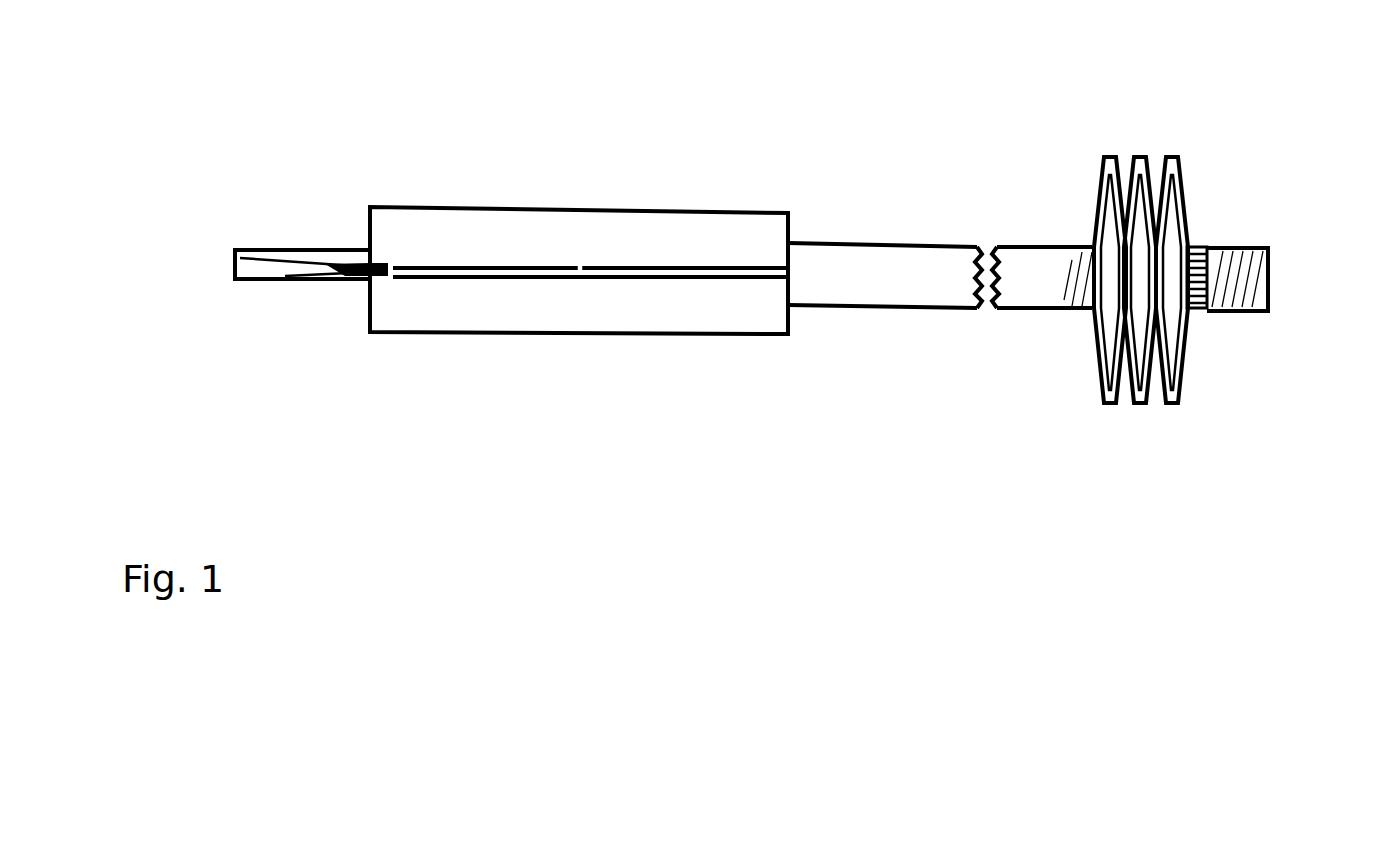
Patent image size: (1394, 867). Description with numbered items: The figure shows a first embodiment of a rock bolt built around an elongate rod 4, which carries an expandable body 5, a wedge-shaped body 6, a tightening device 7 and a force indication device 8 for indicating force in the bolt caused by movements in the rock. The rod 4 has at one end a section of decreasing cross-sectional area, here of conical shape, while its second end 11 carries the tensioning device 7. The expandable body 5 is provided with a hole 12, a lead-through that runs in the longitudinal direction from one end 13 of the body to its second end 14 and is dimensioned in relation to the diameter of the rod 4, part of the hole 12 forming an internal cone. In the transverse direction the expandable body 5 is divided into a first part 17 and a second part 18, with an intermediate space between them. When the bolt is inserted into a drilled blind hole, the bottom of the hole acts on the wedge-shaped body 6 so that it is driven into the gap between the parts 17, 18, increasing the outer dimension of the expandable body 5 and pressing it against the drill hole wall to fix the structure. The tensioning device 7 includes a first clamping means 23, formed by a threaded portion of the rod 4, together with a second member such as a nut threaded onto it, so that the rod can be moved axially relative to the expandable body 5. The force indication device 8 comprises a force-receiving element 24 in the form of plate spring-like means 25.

The elongate rod 4 is at (670, 279).
The expandable body 5 is at (573, 138).
The wedge-shaped body 6 is at (258, 272).
The tightening device 7 is at (1265, 132).
The force indication device 8 is at (1235, 112).
The second end 11 is at (1318, 178).
The hole 12 is at (540, 277).
The one end 13 is at (335, 330).
The second end 14 is at (813, 342).
The first part 17 is at (423, 223).
The second part 18 is at (431, 306).
The first clamping means 23 is at (1197, 244).
The force-receiving element 24 is at (1202, 100).
The plate spring-like means 25 is at (1102, 405).